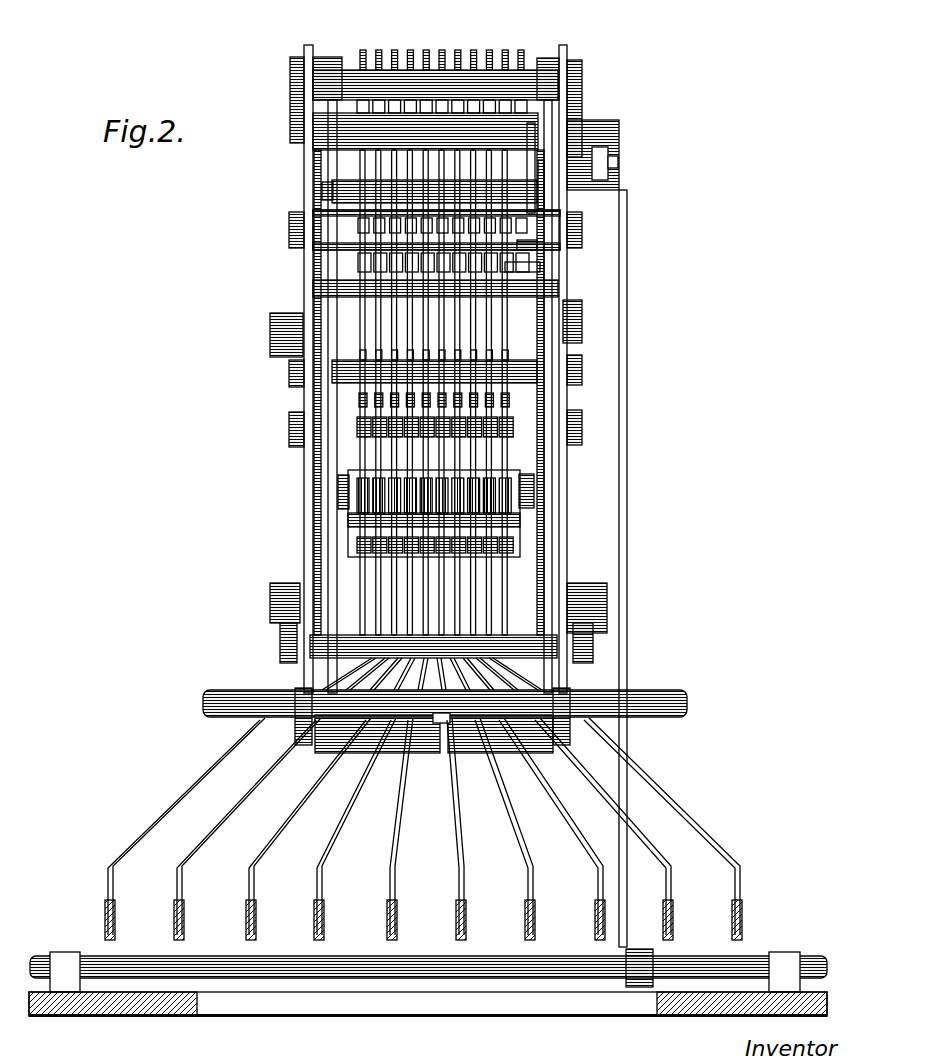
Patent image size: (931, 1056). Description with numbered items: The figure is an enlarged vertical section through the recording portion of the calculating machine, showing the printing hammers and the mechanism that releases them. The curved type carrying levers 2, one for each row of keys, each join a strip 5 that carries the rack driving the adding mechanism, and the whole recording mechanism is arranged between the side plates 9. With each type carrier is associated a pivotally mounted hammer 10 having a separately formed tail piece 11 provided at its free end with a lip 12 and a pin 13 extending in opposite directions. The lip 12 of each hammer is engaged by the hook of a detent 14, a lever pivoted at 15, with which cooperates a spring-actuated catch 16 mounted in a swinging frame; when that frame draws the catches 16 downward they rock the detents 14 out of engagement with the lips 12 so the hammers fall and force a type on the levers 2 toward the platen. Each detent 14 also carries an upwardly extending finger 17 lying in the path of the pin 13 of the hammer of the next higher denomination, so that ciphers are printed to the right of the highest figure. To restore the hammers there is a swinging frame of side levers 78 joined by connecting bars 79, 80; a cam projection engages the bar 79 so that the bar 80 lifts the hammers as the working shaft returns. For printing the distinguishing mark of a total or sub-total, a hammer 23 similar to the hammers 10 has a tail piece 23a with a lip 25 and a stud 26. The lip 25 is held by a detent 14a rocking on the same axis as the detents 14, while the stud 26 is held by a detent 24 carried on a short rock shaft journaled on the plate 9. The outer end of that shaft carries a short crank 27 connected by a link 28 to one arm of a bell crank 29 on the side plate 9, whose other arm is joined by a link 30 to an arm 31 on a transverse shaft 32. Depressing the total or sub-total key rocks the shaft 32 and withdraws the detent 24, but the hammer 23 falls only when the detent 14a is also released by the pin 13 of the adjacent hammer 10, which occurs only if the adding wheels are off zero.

The type carrying lever 2 is at (168, 807).
The strip 5 is at (246, 918).
The side plate 9 is at (303, 499).
The hammer 10 is at (362, 52).
The tail piece 11 is at (345, 212).
The lip 12 is at (356, 265).
The pin 13 is at (350, 227).
The detent 14 is at (362, 318).
The detent 14a is at (546, 306).
The pivot 15 is at (340, 370).
The catch 16 is at (355, 456).
The finger 17 is at (322, 190).
The hammer 23 is at (520, 50).
The tail piece 23a is at (526, 248).
The detent 24 is at (541, 178).
The lip 25 is at (522, 268).
The stud 26 is at (522, 228).
The crank 27 is at (620, 152).
The link 28 is at (616, 163).
The bell crank 29 is at (620, 188).
The link 30 is at (628, 327).
The arm 31 is at (636, 990).
The transverse shaft 32 is at (332, 980).
The side lever 78 is at (316, 540).
The connecting bar 79 is at (420, 756).
The connecting bar 80 is at (340, 180).